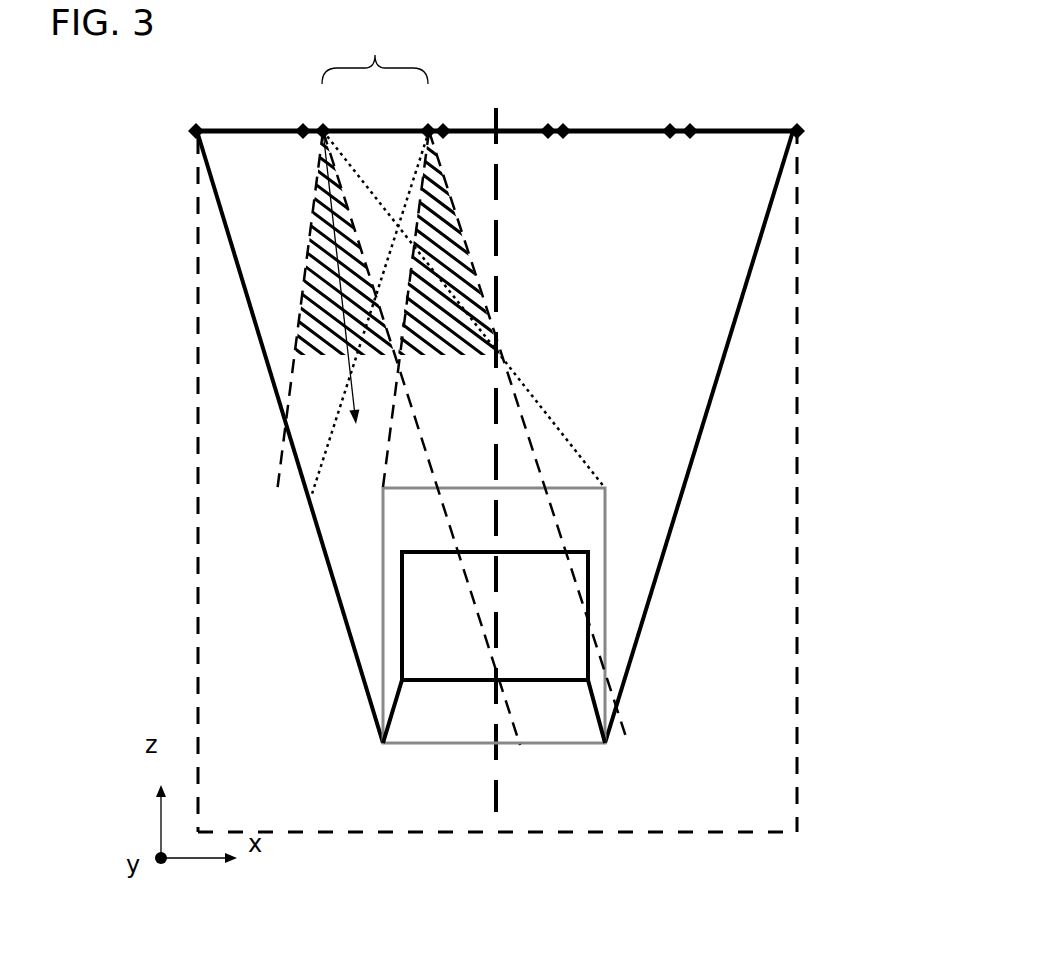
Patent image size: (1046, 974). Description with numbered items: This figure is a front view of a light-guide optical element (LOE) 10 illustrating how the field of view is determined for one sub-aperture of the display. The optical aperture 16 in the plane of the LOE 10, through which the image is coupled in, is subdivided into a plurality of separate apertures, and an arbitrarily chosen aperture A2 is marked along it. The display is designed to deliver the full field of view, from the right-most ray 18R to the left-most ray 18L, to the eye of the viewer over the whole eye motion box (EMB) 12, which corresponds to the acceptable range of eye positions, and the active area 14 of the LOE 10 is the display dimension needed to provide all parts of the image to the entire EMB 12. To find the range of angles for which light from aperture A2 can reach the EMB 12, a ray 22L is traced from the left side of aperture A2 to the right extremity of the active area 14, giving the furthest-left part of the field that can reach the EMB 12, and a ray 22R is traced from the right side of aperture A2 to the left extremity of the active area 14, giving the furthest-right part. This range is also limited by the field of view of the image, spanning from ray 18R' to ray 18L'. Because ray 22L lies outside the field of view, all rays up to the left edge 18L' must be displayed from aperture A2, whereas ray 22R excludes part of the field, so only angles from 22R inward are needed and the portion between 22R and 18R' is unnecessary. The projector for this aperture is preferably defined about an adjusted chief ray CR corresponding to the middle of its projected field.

The light-guide optical element (LOE) 10 is at (743, 835).
The eye motion box (EMB) 12 is at (590, 590).
The active area 14 is at (610, 632).
The optical aperture 16 is at (713, 131).
The left-most ray 18L is at (246, 437).
The right-most ray 18R is at (740, 437).
The left edge ray of the field of view 18L' is at (438, 370).
The right edge ray of the field of view 18R' is at (319, 372).
The ray from left side of aperture A2 22L is at (533, 398).
The ray from right side of aperture A2 22R is at (380, 466).
The adjusted chief ray CR is at (348, 296).
The aperture A2 is at (375, 52).